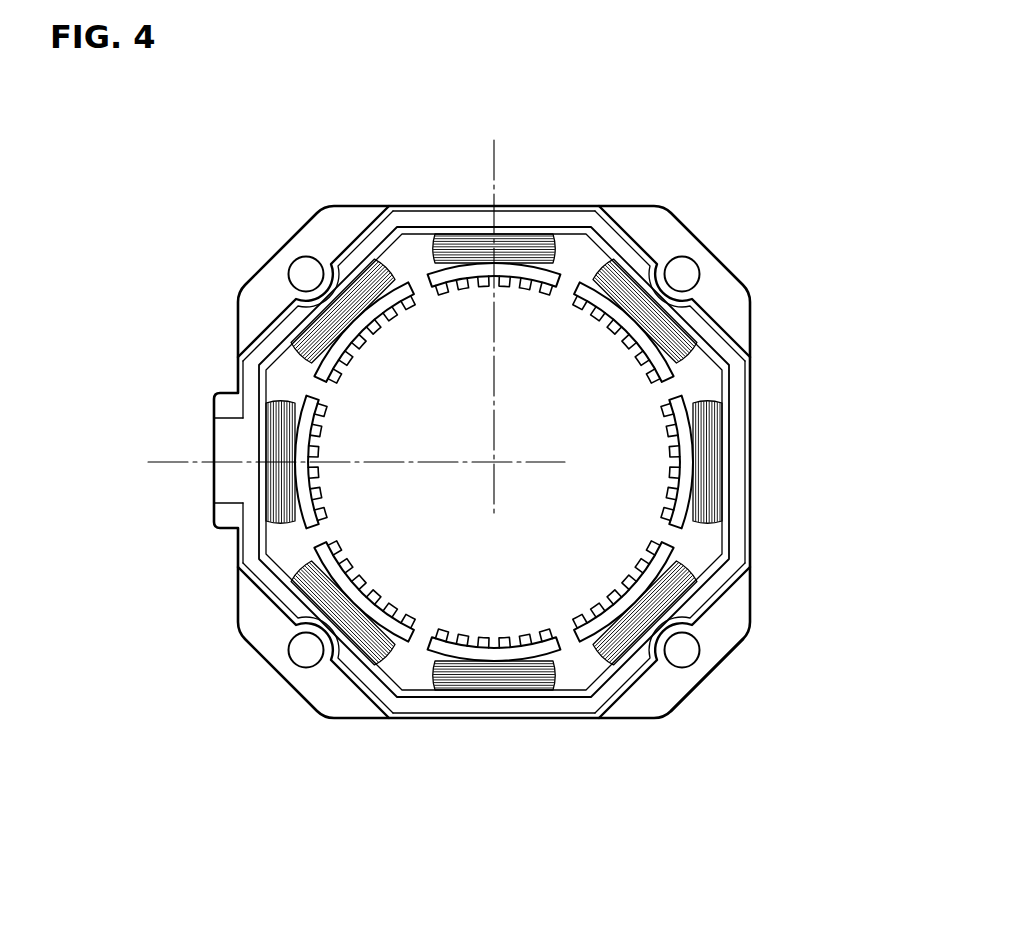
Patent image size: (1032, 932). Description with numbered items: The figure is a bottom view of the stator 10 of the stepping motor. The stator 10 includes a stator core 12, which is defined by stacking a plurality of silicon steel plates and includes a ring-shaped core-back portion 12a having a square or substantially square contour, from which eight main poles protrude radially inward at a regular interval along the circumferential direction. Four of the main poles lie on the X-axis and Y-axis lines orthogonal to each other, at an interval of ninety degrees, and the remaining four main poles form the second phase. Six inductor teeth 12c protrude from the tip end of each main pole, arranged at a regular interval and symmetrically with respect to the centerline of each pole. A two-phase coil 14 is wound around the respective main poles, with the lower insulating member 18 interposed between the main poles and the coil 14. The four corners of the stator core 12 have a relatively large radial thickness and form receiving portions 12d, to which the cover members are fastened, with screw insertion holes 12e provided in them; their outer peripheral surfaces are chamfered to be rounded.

The stator 10 is at (221, 325).
The stator core 12 is at (538, 462).
The core-back portion 12a is at (765, 652).
The inductor teeth 12c is at (494, 386).
The receiving portions 12d is at (476, 432).
The screw insertion holes 12e is at (454, 520).
The two-phase coil 14 is at (471, 462).
The lower insulating member 18 is at (494, 405).